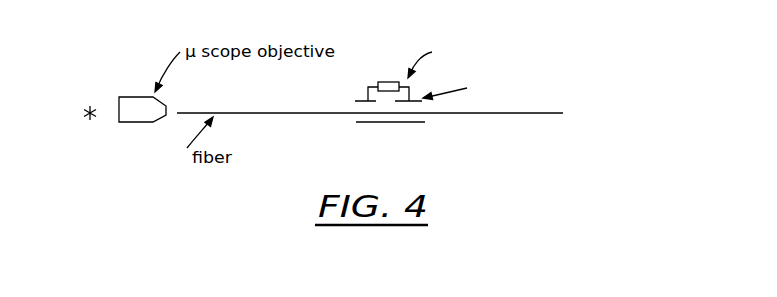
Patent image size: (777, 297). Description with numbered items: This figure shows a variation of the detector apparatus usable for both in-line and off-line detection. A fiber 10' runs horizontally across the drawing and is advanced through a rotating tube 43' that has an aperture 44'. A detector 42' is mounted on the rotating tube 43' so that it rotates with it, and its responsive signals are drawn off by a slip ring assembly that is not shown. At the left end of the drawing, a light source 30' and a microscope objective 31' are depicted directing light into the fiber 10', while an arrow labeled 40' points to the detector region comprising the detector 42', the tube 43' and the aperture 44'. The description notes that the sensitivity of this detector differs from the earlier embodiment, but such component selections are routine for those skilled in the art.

The fiber 10' is at (408, 116).
The light source 30' is at (77, 82).
The microscope objective 31' is at (141, 83).
The detection assembly 40' is at (505, 52).
The detector 42' is at (387, 62).
The rotating tube 43' is at (410, 120).
The aperture 44' is at (362, 94).